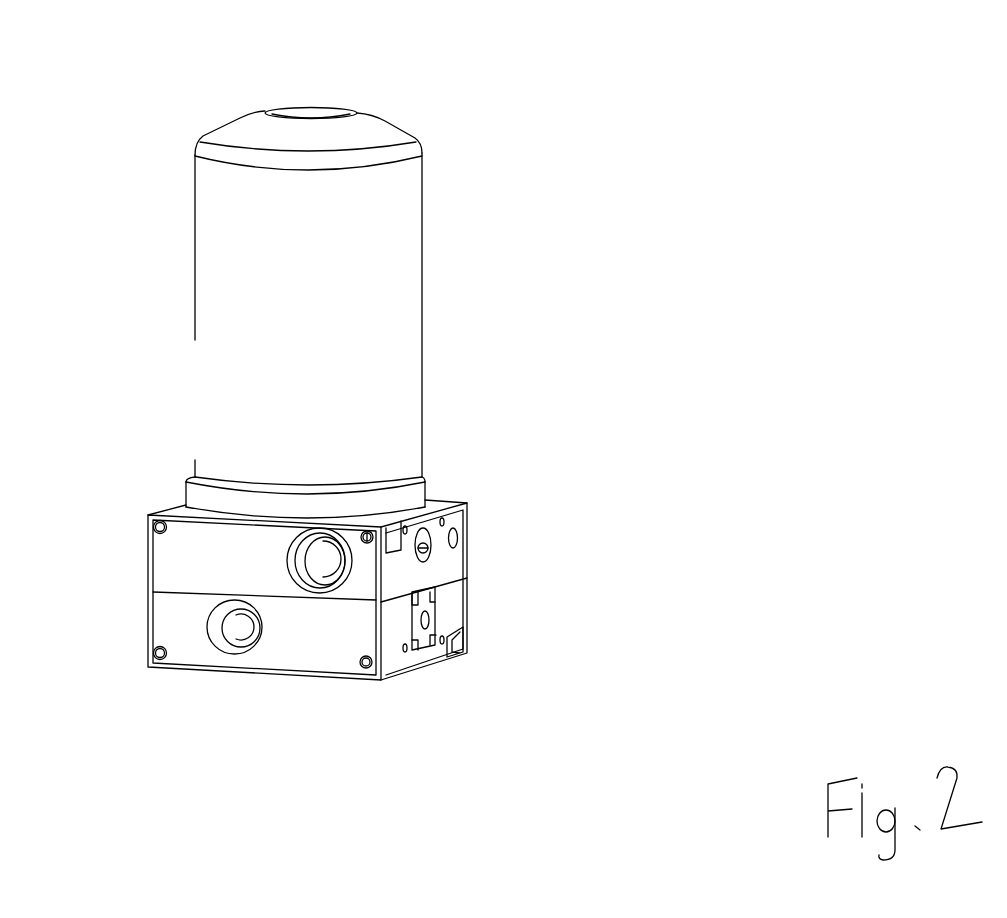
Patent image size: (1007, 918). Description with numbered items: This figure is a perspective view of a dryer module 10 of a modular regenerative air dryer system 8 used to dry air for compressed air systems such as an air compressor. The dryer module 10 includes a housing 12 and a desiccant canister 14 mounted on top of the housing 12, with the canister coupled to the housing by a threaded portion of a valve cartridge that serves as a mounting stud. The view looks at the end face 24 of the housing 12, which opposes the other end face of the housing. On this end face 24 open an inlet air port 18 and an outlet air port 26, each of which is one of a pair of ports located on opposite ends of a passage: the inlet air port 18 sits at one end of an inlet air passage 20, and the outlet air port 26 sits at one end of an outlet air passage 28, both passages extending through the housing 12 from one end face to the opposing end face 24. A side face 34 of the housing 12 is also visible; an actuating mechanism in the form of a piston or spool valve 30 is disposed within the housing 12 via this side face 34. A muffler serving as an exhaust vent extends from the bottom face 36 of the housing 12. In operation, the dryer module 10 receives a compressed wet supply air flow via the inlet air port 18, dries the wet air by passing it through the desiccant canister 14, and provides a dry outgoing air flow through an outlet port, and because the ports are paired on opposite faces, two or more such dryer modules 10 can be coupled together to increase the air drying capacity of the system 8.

The modular regenerative air dryer system 8 is at (596, 51).
The dryer module 10 is at (567, 232).
The housing 12 is at (470, 560).
The desiccant canister 14 is at (423, 306).
The inlet air port 18 is at (245, 641).
The inlet air passage 20 is at (228, 639).
The end face 24 is at (170, 552).
The outlet air port 26 is at (337, 584).
The outlet air passage 28 is at (320, 575).
The spool valve 30 is at (425, 613).
The side face 34 is at (452, 592).
The bottom face 36 is at (167, 670).